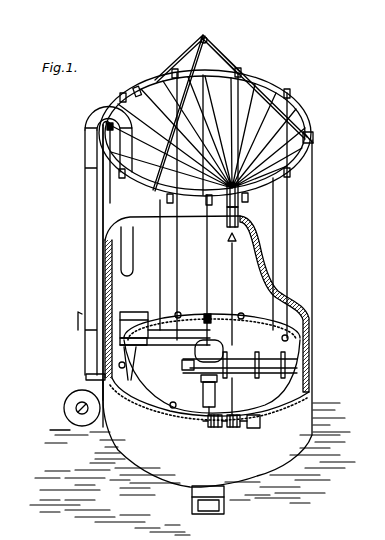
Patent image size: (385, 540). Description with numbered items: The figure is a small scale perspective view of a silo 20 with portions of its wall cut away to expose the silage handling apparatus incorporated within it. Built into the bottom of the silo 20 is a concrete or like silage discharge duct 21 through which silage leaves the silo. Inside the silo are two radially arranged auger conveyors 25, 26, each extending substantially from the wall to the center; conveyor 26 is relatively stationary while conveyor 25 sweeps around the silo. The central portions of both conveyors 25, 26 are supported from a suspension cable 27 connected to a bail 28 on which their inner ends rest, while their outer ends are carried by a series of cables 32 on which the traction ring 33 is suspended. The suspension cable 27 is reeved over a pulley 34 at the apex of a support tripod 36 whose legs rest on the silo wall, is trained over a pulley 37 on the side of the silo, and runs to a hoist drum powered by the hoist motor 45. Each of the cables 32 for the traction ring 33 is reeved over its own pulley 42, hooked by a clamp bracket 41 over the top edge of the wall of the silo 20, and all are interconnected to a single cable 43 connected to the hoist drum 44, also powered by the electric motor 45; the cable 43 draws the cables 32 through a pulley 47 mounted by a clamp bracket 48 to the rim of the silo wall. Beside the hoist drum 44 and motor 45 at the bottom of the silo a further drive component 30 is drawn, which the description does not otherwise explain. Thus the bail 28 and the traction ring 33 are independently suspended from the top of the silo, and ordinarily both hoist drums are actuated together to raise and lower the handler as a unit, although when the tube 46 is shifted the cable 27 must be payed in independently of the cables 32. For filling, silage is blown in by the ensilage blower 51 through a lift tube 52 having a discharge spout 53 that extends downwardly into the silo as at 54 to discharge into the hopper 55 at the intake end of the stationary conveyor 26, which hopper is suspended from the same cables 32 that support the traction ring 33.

The silo 20 is at (300, 281).
The silage discharge duct 21 is at (224, 508).
The conveyor 25 is at (266, 385).
The conveyor 26 is at (167, 336).
The suspension cable 27 is at (209, 276).
The bail 28 is at (205, 319).
The motor 30 is at (209, 428).
The cables 32 is at (255, 143).
The traction ring 33 is at (283, 322).
The pulley 34 is at (207, 42).
The support tripod 36 is at (238, 66).
The pulley 37 is at (206, 203).
The clamp brackets 41 is at (123, 95).
The pulley 42 is at (139, 95).
The single cable 43 is at (269, 273).
The hoist drum 44 is at (235, 428).
The hoist motor 45 is at (261, 423).
The tube 46 is at (204, 395).
The pulley 47 is at (240, 203).
The clamp bracket 48 is at (240, 217).
The ensilage blower 51 is at (70, 411).
The lift tube 52 is at (85, 259).
The discharge spout 53 is at (76, 116).
The downward extension of discharge spout 54 is at (134, 265).
The hopper 55 is at (142, 312).